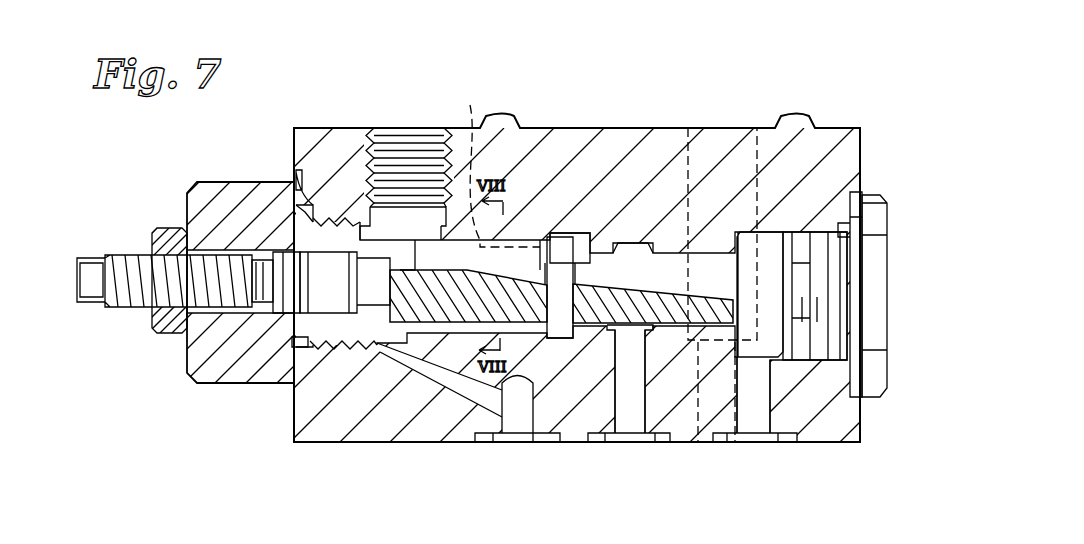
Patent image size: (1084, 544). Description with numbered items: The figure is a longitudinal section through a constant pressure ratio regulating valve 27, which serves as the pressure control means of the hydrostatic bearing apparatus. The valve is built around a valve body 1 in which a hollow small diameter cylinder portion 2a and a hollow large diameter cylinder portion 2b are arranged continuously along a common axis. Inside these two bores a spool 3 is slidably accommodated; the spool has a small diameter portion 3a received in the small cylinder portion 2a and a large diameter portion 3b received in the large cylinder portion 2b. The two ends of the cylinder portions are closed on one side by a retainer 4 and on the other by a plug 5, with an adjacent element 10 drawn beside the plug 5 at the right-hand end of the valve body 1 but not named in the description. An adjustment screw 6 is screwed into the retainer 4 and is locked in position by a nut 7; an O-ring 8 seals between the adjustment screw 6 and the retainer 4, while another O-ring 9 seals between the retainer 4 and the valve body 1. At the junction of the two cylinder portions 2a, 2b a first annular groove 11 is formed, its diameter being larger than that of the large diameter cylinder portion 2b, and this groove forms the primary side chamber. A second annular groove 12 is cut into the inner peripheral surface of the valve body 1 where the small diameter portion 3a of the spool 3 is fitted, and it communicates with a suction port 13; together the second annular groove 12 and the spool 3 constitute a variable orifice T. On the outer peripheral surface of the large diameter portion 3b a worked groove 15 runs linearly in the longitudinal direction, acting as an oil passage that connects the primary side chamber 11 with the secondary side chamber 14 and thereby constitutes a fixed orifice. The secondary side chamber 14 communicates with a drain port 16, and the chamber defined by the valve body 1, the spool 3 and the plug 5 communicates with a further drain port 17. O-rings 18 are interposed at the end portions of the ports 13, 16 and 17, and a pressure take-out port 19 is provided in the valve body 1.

The valve body 1 is at (630, 168).
The small diameter cylinder portion 2a is at (710, 258).
The large diameter cylinder portion 2b is at (527, 333).
The spool 3 is at (527, 238).
The small diameter portion 3a is at (673, 330).
The large diameter portion 3b is at (470, 240).
The retainer 4 is at (230, 188).
The plug 5 is at (878, 288).
The adjustment screw 6 is at (122, 306).
The nut 7 is at (155, 245).
The O-ring 8 is at (287, 311).
The O-ring 9 is at (293, 200).
The washer 10 is at (852, 229).
The first annular groove 11 is at (573, 245).
The second annular groove 12 is at (647, 242).
The suction port 13 is at (625, 445).
The secondary side chamber 14 is at (372, 366).
The worked groove 15 is at (483, 236).
The drain port 16 is at (514, 445).
The drain port 17 is at (750, 446).
The O-rings 18 is at (550, 446).
The pressure take-out port 19 is at (398, 138).
The constant pressure ratio regulating valve 27 is at (838, 112).
The variable orifice T is at (614, 252).